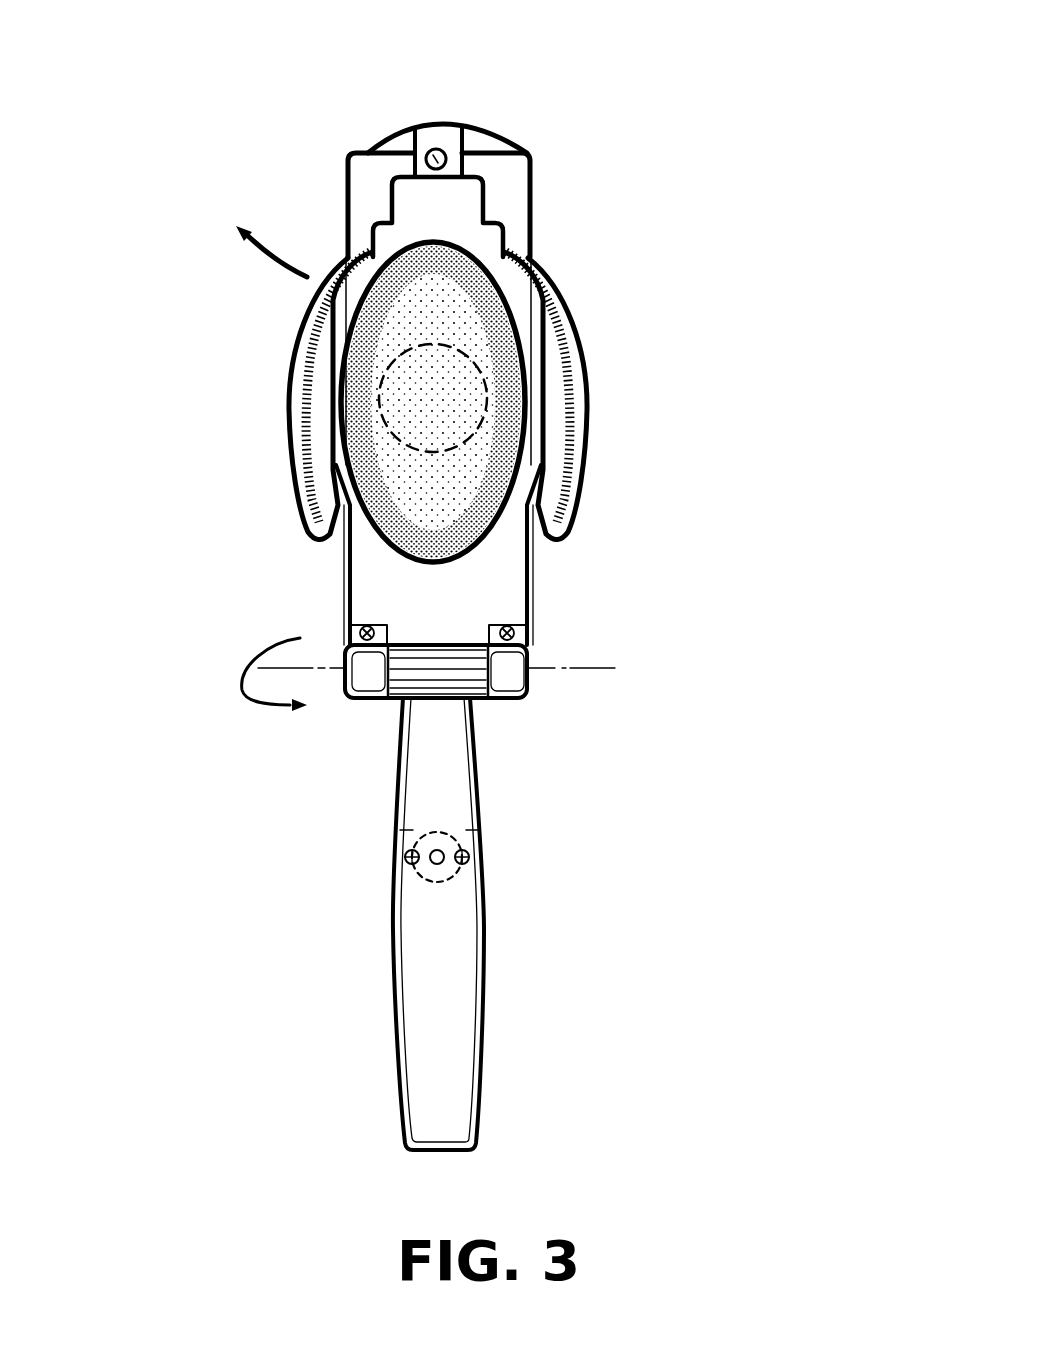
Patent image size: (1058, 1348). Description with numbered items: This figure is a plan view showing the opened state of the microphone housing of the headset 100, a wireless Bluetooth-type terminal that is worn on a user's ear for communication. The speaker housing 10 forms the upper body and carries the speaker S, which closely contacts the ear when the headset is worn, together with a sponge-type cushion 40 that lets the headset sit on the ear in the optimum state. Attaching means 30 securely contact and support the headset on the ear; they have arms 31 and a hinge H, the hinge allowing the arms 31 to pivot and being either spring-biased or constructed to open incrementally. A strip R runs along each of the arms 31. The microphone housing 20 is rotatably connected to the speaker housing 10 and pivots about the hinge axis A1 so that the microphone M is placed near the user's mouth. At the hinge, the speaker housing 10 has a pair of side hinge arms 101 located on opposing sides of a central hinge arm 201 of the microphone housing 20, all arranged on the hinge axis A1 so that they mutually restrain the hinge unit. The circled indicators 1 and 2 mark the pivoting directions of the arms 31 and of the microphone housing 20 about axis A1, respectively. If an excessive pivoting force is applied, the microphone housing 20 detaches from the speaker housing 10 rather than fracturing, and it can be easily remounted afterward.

The headset 100 is at (258, 303).
The speaker housing 10 is at (328, 602).
The arms 31 is at (370, 183).
The hinge H is at (434, 150).
The attaching means 30 is at (297, 425).
The rubber strip R is at (315, 490).
The sponge-type cushion 40 is at (513, 323).
The speaker S is at (458, 449).
The side hinge arms 101 is at (367, 678).
The central hinge arm 201 is at (437, 677).
The hinge axis A1 is at (583, 668).
The microphone housing 20 is at (498, 958).
The microphone M is at (467, 856).
The rotation direction 1 is at (280, 260).
The rotation direction 2 is at (280, 655).